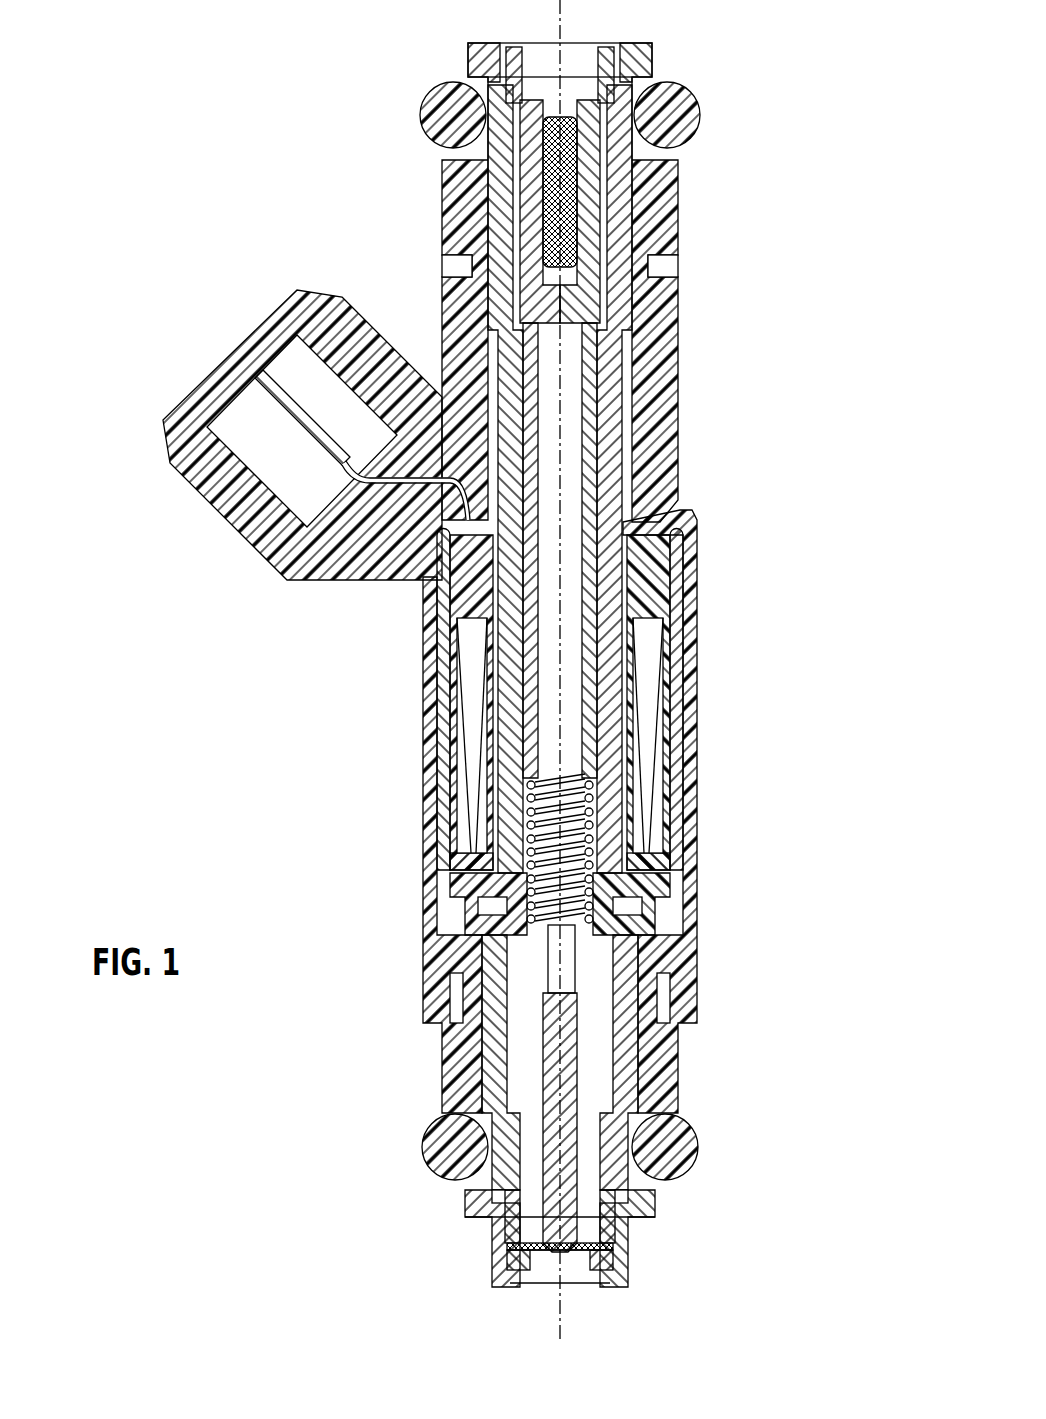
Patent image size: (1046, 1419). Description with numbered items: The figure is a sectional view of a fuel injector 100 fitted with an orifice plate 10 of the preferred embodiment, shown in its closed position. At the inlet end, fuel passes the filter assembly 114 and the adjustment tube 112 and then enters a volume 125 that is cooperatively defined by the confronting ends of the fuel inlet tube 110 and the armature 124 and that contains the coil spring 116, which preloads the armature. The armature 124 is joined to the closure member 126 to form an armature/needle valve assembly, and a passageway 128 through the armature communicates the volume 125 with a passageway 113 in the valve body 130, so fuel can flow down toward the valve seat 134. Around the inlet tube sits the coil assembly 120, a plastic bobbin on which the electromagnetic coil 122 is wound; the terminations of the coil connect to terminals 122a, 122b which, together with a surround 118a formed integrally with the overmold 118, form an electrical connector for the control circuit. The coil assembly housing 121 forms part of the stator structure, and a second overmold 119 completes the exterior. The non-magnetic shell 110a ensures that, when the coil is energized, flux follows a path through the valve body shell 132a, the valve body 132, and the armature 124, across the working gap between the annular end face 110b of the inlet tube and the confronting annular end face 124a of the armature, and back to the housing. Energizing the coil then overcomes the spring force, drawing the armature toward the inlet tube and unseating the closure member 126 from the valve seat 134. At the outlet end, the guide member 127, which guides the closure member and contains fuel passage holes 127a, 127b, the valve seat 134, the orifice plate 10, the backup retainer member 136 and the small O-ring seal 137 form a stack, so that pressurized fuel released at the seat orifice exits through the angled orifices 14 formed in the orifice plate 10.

The fuel injector 100 is at (813, 186).
The filter assembly 114 is at (563, 100).
The adjustment tube 112 is at (472, 267).
The passageway 113 is at (650, 283).
The first overmold 118 is at (680, 393).
The surround 118a is at (330, 290).
The terminal 122a is at (280, 385).
The terminal 122b is at (406, 490).
The fuel inlet tube 110 is at (622, 318).
The non-magnetic shell 110a is at (425, 849).
The annular end face 110b is at (423, 782).
The second overmold 119 is at (427, 1025).
The coil assembly housing 121 is at (700, 535).
The coil assembly 120 is at (645, 660).
The electromagnetic coil 122 is at (665, 742).
The coil spring 116 is at (590, 823).
The armature 124 is at (640, 882).
The annular end face 124a is at (505, 882).
The volume 125 is at (642, 918).
The closure member 126 is at (640, 1085).
The passageway 128 is at (600, 978).
The valve body 130 is at (745, 965).
The valve body 132 is at (690, 1118).
The valve body shell 132a is at (700, 937).
The guide member 127 is at (490, 1215).
The fuel passage hole 127a is at (660, 1190).
The fuel passage hole 127b is at (505, 1190).
The valve seat 134 is at (653, 1200).
The backup retainer member 136 is at (522, 1273).
The O-ring seal 137 is at (505, 1232).
The orifice plate 10 is at (583, 1263).
The angled orifices 14 is at (573, 1255).